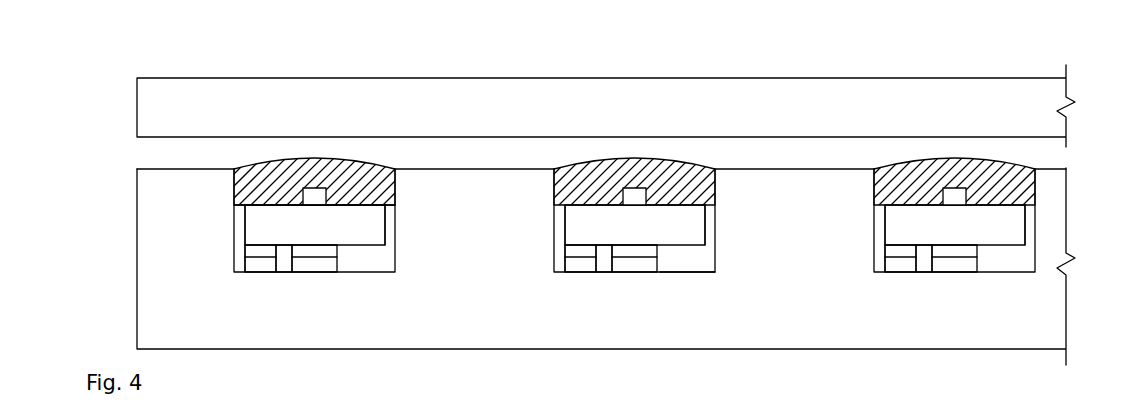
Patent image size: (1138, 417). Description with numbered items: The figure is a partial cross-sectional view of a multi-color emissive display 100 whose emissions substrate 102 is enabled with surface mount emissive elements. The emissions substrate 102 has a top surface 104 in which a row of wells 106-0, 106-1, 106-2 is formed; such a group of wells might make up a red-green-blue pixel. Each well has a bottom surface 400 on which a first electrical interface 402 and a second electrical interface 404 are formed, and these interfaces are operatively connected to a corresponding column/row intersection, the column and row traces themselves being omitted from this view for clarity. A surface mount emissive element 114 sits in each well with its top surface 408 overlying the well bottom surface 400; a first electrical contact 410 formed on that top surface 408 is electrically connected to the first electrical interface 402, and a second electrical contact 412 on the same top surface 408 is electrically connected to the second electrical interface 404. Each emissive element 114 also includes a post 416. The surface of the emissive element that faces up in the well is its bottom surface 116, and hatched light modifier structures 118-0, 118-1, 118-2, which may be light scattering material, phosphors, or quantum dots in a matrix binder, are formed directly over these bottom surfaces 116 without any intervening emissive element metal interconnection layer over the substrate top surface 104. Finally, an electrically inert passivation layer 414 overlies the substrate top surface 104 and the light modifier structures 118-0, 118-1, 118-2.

The display 100 is at (962, 58).
The emissions substrate 102 is at (993, 318).
The top surface 104 is at (798, 172).
The well 106-0 is at (262, 157).
The well 106-1 is at (566, 157).
The well 106-2 is at (907, 157).
The emissive element 114 is at (653, 235).
The bottom surface 116 is at (250, 203).
The light modifier structure 118-0 is at (378, 172).
The light modifier structure 118-1 is at (675, 173).
The light modifier structure 118-2 is at (905, 170).
The bottom surface 400 is at (677, 274).
The first electrical interface 402 is at (258, 265).
The second electrical interface 404 is at (313, 265).
The top surface 408 is at (695, 248).
The first electrical contact 410 is at (248, 252).
The second electrical contact 412 is at (333, 251).
The passivation layer 414 is at (622, 118).
The post 416 is at (632, 197).